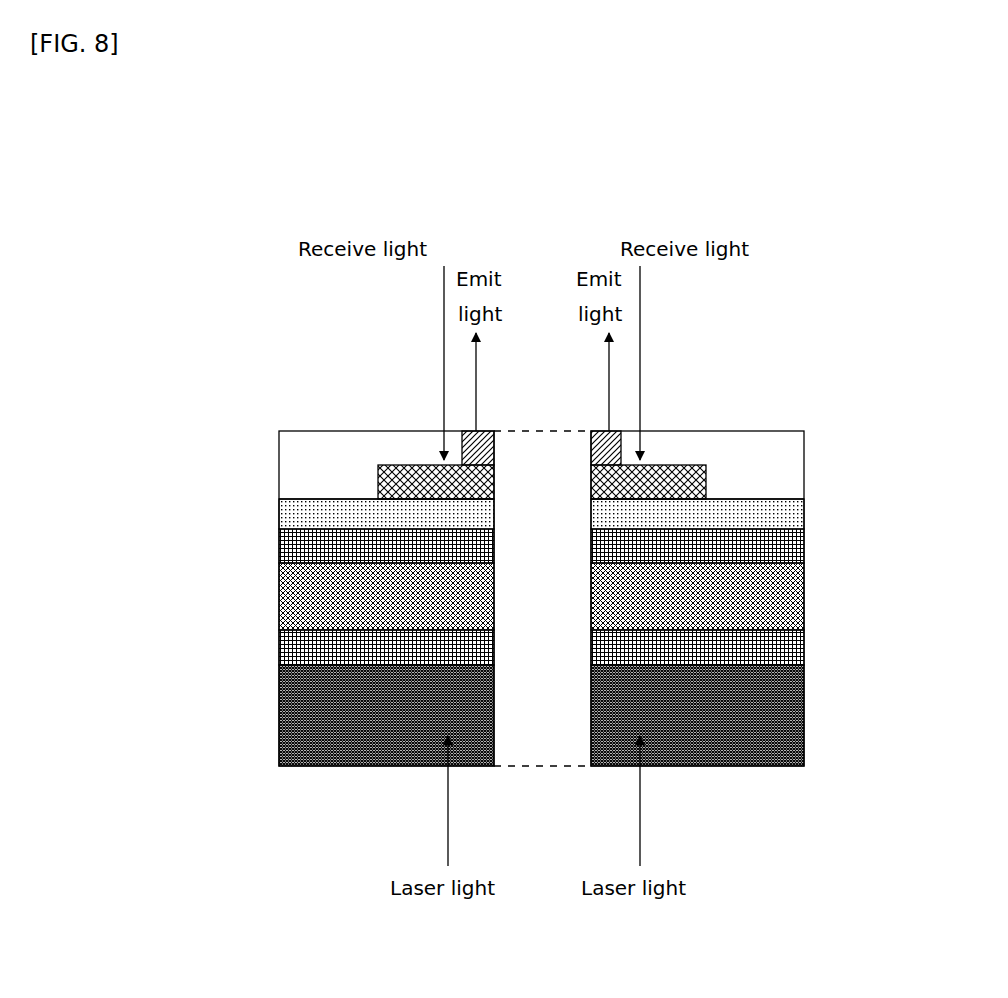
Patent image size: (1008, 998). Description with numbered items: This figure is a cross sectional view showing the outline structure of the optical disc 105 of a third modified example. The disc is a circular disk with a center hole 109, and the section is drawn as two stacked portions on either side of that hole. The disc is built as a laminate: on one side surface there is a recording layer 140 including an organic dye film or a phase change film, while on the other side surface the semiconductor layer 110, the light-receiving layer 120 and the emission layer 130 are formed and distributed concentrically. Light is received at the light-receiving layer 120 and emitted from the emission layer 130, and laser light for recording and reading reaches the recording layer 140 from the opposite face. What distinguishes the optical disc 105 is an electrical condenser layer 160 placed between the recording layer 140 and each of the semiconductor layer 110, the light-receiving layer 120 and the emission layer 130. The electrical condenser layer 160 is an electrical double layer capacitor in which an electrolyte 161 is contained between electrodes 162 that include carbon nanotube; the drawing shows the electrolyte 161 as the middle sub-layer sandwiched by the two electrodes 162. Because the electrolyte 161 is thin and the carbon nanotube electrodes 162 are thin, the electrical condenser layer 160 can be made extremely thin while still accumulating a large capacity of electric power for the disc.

The optical disc 105 is at (292, 390).
The center hole 109 is at (557, 602).
The semiconductor layer 110 is at (760, 513).
The light-receiving layer 120 is at (682, 457).
The emission layer 130 is at (578, 420).
The recording layer 140 is at (797, 728).
The electrical condenser layer 160 is at (533, 598).
The electrolyte 161 is at (271, 585).
The electrodes 162 is at (271, 530).